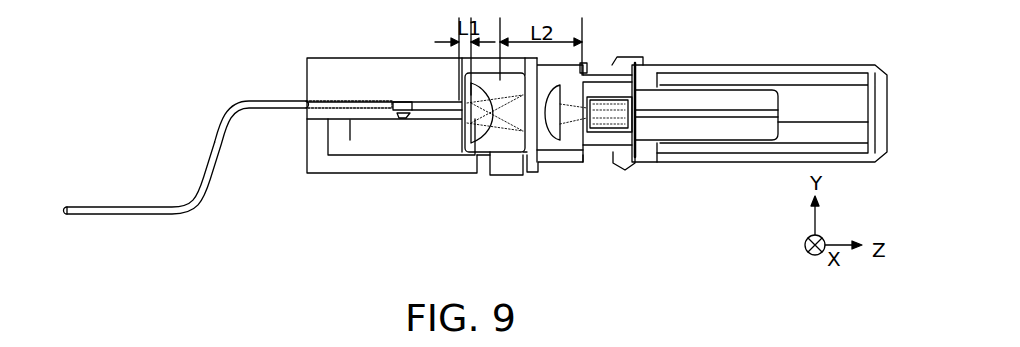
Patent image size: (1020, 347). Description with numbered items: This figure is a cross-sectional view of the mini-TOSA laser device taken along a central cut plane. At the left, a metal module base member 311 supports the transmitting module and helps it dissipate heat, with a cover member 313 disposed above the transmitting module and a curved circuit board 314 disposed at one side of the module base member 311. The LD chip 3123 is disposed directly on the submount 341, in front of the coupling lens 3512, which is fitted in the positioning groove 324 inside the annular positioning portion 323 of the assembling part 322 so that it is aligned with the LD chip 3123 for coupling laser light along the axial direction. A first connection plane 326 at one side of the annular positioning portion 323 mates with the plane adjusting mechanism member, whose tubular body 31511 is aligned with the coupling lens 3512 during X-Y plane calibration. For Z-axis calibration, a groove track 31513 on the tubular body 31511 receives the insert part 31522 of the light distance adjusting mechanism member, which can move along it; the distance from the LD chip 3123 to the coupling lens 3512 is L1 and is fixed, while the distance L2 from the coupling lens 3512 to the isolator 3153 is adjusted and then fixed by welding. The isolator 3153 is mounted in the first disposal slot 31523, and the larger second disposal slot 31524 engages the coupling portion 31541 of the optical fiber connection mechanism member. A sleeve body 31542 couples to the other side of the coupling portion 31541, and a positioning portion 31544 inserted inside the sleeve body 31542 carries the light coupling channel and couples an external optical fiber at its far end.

The module base member 311 is at (340, 58).
The cover member 313 is at (375, 173).
The curved circuit board 314 is at (202, 188).
The submount 341 is at (428, 106).
The LD chip 3123 is at (452, 110).
The coupling lens 3512 is at (483, 122).
The annular positioning portion 323 is at (495, 175).
The positioning groove 324 is at (513, 173).
The assembling part 322 is at (520, 265).
The first connection plane 326 is at (555, 158).
The tubular body 31511 is at (588, 160).
The groove track 31513 is at (585, 64).
The insert part 31522 is at (593, 157).
The first disposal slot 31523 is at (615, 70).
The second disposal slot 31524 is at (630, 78).
The isolator 3153 is at (617, 143).
The coupling portion 31541 is at (682, 80).
The sleeve body 31542 is at (780, 68).
The positioning portion 31544 is at (700, 135).